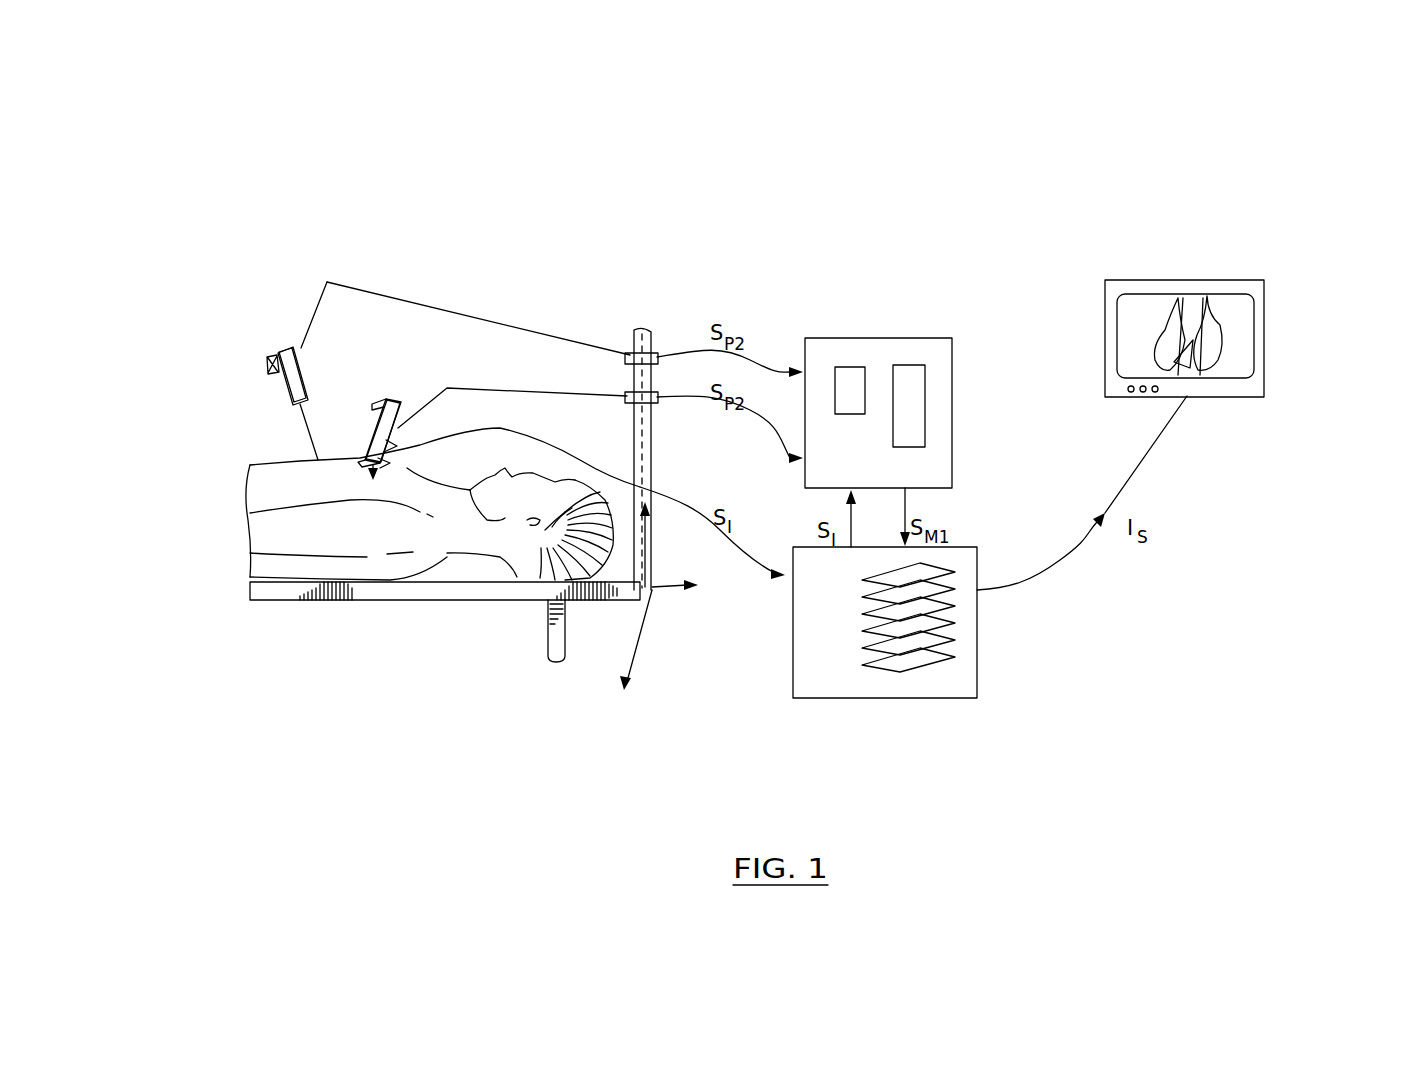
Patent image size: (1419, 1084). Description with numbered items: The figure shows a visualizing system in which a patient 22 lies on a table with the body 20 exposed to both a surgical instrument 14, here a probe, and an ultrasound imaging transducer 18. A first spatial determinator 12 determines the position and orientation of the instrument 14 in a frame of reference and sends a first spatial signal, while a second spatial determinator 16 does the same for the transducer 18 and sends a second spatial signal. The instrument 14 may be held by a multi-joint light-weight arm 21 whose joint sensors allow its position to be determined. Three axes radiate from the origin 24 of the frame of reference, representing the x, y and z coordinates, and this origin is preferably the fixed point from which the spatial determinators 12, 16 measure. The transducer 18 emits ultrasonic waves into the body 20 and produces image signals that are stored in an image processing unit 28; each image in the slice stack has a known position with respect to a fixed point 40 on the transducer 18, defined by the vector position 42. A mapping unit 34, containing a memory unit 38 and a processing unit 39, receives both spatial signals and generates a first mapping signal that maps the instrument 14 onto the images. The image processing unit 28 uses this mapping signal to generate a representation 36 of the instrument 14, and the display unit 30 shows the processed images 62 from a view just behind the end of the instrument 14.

The first spatial determinator 12 is at (273, 418).
The surgical instrument 14 is at (278, 330).
The second spatial determinator 16 is at (371, 393).
The ultrasound imaging transducer 18 is at (407, 390).
The body 20 is at (247, 464).
The multi-joint light-weight arm 21 is at (530, 317).
The patient 22 is at (480, 568).
The origin 24 is at (262, 356).
The image processing unit 28 is at (826, 712).
The display unit 30 is at (1181, 267).
The mapping unit 34 is at (916, 322).
The representation of the instrument 36 is at (1195, 392).
The memory unit 38 is at (849, 355).
The processing unit 39 is at (945, 378).
The fixed point on the transducer 40 is at (402, 446).
The vector position 42 is at (397, 464).
The processed images 62 is at (1240, 308).